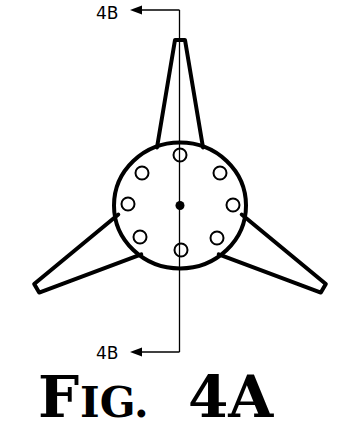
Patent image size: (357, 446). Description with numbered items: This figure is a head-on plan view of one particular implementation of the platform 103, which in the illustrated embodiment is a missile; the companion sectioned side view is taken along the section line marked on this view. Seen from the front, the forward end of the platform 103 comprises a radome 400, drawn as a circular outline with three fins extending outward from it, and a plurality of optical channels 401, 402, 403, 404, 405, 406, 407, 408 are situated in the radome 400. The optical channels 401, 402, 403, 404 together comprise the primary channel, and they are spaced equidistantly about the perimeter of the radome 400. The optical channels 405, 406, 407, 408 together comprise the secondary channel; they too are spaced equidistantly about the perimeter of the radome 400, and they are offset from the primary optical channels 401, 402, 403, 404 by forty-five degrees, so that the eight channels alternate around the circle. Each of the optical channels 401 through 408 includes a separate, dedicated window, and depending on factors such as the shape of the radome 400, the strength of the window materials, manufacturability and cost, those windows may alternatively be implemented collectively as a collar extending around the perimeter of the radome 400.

The platform 103 is at (270, 62).
The radome 400 is at (150, 143).
The optical channel 401 is at (186, 152).
The optical channel 402 is at (240, 204).
The optical channel 403 is at (187, 255).
The optical channel 404 is at (121, 203).
The optical channel 405 is at (226, 171).
The optical channel 406 is at (223, 234).
The optical channel 407 is at (109, 224).
The optical channel 408 is at (136, 169).